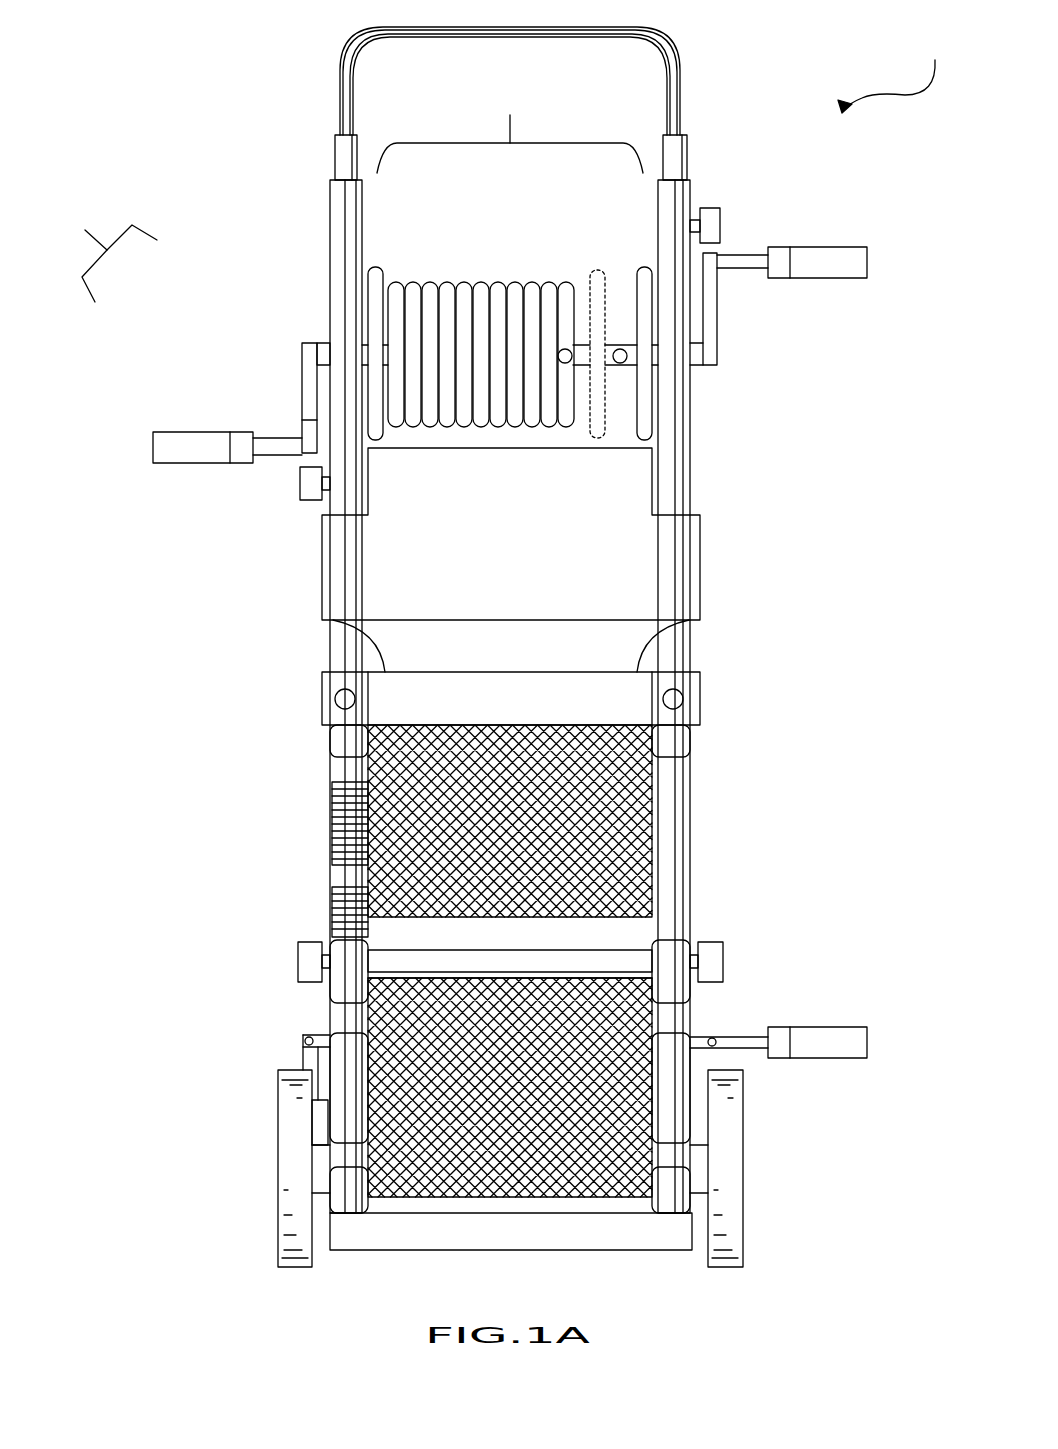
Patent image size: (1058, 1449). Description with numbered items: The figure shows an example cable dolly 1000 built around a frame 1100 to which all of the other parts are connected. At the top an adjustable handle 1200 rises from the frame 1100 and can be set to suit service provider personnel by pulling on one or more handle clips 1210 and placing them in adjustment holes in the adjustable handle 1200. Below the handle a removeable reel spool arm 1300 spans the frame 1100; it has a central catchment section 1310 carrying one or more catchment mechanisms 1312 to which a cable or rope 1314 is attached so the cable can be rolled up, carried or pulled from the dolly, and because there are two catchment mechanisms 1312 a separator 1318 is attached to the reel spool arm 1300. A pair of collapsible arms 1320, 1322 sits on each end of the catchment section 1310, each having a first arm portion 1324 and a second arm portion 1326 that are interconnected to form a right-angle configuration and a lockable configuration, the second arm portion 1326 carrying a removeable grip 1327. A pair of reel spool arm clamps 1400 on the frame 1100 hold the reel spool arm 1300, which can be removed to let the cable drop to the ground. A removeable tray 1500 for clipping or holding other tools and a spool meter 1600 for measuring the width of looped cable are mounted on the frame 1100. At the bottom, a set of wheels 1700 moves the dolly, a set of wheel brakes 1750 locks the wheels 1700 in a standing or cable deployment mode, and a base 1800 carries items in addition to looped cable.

The cable dolly 1000 is at (960, 42).
The frame 1100 is at (332, 205).
The adjustable handle 1200 is at (672, 60).
The handle clips 1210 is at (712, 206).
The removeable reel spool arm 1300 is at (323, 338).
The catchment section 1310 is at (535, 99).
The catchment mechanisms 1312 is at (620, 364).
The rope 1314 is at (420, 280).
The separator 1318 is at (586, 268).
The collapsible arm 1320 is at (92, 207).
The collapsible arm 1322 is at (743, 297).
The first arm portion 1324 is at (303, 385).
The second arm portion 1326 is at (287, 438).
The removeable grip 1327 is at (193, 430).
The reel spool arm clamps 1400 is at (288, 475).
The removeable tray 1500 is at (320, 568).
The spool meter 1600 is at (332, 815).
The set of wheels 1700 is at (283, 1125).
The set of wheel brakes 1750 is at (833, 1048).
The base 1800 is at (390, 1250).